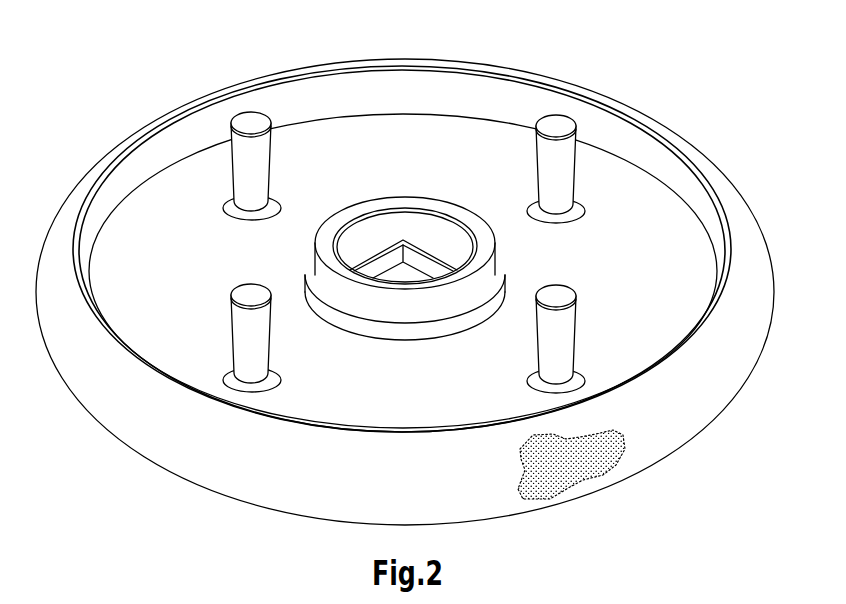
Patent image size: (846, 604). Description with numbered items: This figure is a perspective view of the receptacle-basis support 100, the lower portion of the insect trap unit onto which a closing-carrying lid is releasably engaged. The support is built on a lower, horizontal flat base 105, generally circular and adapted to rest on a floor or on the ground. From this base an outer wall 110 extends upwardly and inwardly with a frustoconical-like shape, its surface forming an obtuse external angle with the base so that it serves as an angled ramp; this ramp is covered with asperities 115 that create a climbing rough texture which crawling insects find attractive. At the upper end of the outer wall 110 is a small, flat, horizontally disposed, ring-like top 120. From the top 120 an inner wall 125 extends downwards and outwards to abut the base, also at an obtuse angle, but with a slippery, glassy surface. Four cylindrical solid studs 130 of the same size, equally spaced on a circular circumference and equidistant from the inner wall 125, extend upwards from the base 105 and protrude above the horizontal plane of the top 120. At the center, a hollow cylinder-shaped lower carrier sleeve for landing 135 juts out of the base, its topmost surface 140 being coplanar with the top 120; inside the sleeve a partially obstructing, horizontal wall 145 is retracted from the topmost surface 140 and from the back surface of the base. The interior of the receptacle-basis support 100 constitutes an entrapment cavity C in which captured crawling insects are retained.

The receptacle-basis support 100 is at (420, 299).
The lower, horizontal flat base 105 is at (200, 250).
The outer wall 110 is at (415, 316).
The asperities 115 is at (578, 463).
The top 120 is at (720, 202).
The inner wall 125 is at (188, 140).
The cylindrical solid studs 130 is at (557, 175).
The lower carrier sleeve for landing 135 is at (390, 316).
The topmost surface 140 is at (397, 298).
The partially obstructing, horizontal wall 145 is at (438, 253).
The entrapment cavity C is at (166, 321).